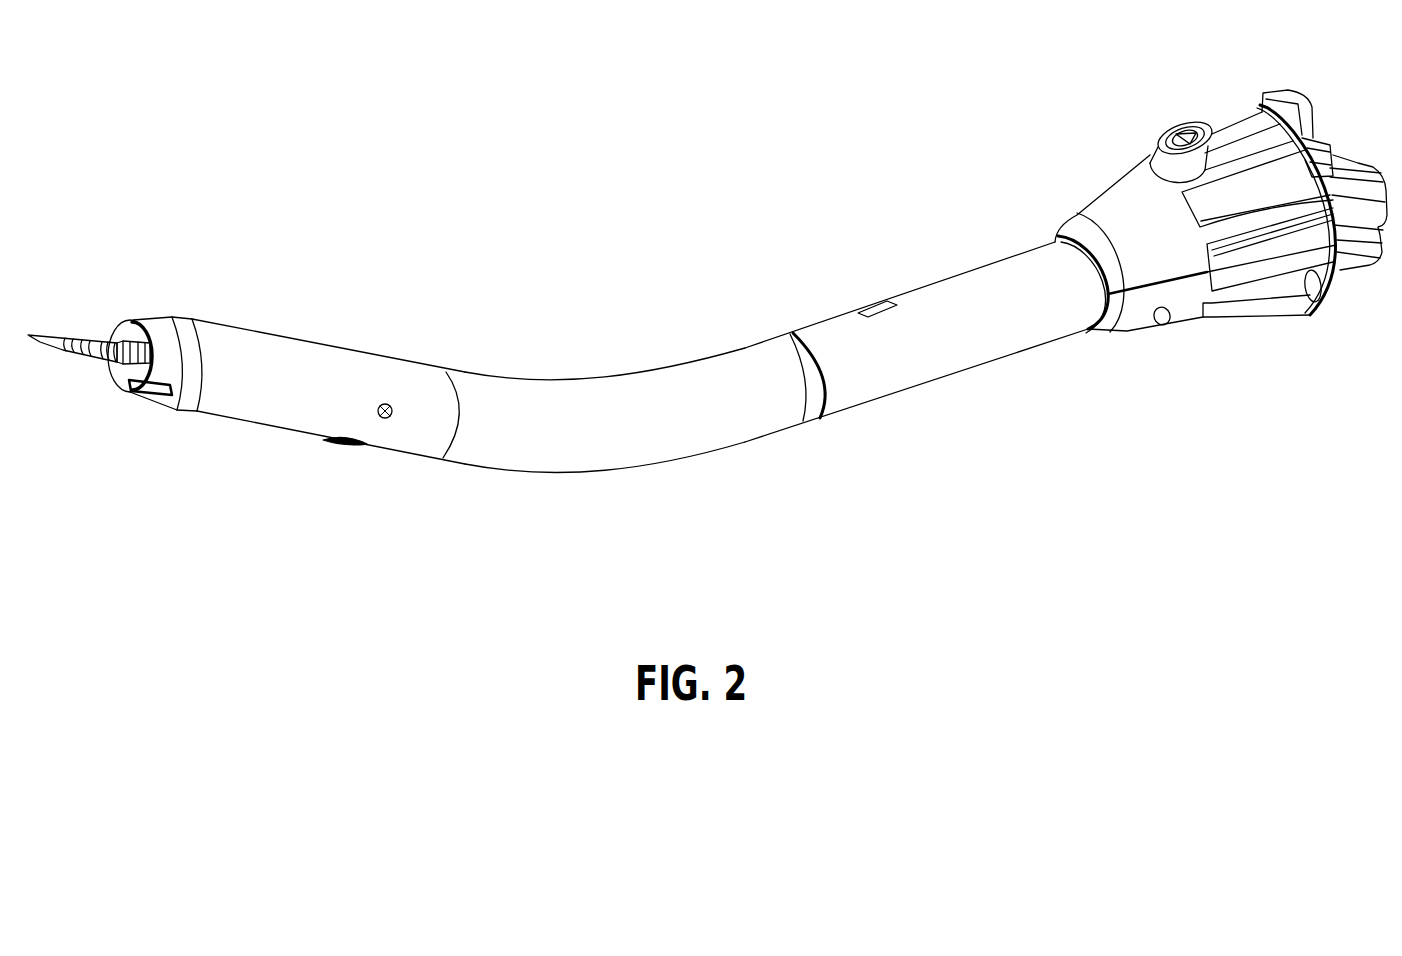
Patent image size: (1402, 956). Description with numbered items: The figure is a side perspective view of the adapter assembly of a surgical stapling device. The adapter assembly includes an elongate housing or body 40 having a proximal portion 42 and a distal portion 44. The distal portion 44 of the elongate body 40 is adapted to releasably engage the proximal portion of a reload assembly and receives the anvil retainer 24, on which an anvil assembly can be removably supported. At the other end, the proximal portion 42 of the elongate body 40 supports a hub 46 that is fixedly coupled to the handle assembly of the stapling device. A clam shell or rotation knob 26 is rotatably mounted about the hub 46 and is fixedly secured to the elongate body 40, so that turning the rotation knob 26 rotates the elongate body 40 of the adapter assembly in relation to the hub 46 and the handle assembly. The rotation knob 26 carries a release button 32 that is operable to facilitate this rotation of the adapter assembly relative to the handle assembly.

The anvil retainer 24 is at (58, 333).
The rotation knob 26 is at (1103, 191).
The release button 32 is at (1178, 137).
The elongate body 40 is at (676, 390).
The proximal portion 42 is at (1034, 258).
The distal portion 44 is at (325, 360).
The hub 46 is at (1351, 157).